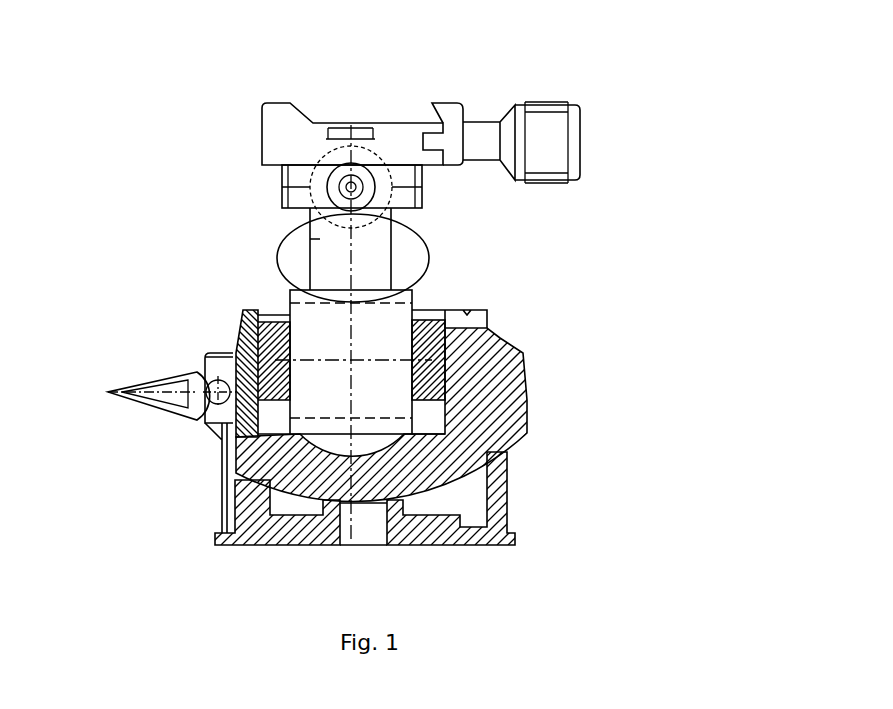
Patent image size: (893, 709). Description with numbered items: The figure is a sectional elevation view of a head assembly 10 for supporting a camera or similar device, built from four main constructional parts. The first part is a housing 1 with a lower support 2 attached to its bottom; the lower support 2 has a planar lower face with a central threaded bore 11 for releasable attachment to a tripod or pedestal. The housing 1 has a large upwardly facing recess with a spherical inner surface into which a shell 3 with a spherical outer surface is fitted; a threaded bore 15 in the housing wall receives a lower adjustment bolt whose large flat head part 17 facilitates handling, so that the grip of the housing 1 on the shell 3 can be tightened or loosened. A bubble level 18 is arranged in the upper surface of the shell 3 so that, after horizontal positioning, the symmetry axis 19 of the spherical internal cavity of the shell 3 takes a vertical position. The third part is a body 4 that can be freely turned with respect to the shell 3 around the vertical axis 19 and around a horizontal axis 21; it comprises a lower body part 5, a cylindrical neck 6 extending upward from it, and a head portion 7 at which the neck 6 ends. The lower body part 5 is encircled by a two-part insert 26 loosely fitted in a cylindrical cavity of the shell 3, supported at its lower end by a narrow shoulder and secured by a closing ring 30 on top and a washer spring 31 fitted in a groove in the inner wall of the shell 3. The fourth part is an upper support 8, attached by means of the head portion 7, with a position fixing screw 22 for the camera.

The housing 1 is at (362, 313).
The lower support 2 is at (442, 546).
The shell 3 is at (492, 334).
The body 4 is at (310, 130).
The lower body part 5 is at (399, 311).
The neck 6 is at (410, 224).
The head portion 7 is at (282, 187).
The upper support 8 is at (400, 121).
The head assembly 10 is at (247, 321).
The mounting bore 11 is at (362, 546).
The threaded bore 15 is at (208, 424).
The flat head part 17 is at (122, 403).
The bubble level 18 is at (493, 326).
The symmetry axis 19 is at (294, 222).
The horizontal axis 21 is at (206, 354).
The position fixing screw 22 is at (547, 100).
The insert 26 is at (445, 375).
The closing ring 30 is at (249, 309).
The washer spring 31 is at (262, 318).